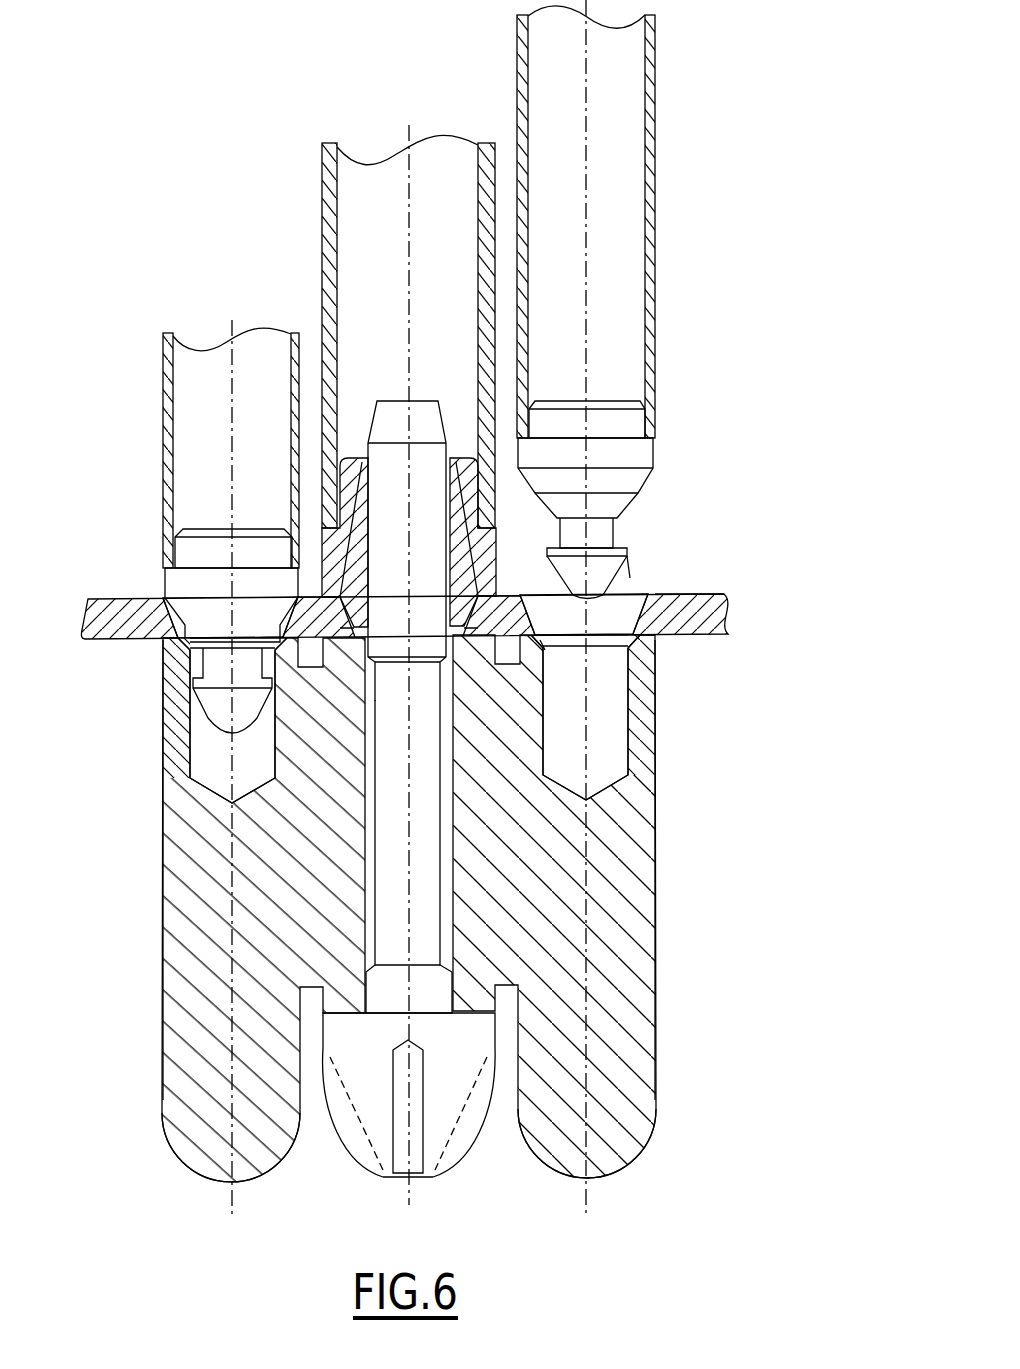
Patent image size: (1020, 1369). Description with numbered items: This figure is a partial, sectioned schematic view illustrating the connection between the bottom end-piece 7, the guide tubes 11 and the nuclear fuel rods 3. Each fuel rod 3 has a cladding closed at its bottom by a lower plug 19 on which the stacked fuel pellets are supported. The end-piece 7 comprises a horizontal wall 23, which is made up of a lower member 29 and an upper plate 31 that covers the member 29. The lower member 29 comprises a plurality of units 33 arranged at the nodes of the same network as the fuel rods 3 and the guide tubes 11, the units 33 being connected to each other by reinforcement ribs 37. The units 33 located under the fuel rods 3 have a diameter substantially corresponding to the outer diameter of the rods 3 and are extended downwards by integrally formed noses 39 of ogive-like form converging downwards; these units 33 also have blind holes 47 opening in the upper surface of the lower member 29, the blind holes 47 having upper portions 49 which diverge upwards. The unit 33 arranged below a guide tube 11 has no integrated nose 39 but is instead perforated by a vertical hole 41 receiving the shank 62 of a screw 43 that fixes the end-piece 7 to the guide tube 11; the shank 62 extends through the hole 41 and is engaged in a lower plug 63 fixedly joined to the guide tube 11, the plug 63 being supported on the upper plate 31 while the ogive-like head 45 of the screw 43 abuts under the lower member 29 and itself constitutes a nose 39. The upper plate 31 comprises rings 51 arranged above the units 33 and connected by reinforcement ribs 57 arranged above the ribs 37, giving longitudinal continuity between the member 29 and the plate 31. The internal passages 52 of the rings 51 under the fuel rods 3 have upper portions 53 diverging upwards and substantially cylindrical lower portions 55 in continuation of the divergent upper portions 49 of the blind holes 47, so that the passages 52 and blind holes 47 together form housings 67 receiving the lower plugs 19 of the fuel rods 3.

The nuclear fuel rod 3 is at (150, 485).
The end-piece 7 is at (762, 607).
The guide tube 11 is at (320, 216).
The lower plug 19 is at (222, 561).
The horizontal wall 23 is at (752, 730).
The lower member 29 is at (735, 890).
The upper plate 31 is at (708, 590).
The unit 33 is at (187, 875).
The reinforcement rib 37 is at (305, 962).
The nose 39 is at (192, 1127).
The vertical hole 41 is at (448, 820).
The screw 43 is at (352, 1178).
The head 45 is at (458, 1130).
The blind hole 47 is at (205, 752).
The upper portion 49 is at (172, 655).
The ring 51 is at (162, 594).
The internal passage 52 is at (462, 632).
The upper portion 53 is at (176, 616).
The lower portion 55 is at (186, 637).
The reinforcement rib 57 is at (318, 618).
The shank 62 is at (399, 805).
The lower plug 63 is at (480, 570).
The housing 67 is at (190, 690).